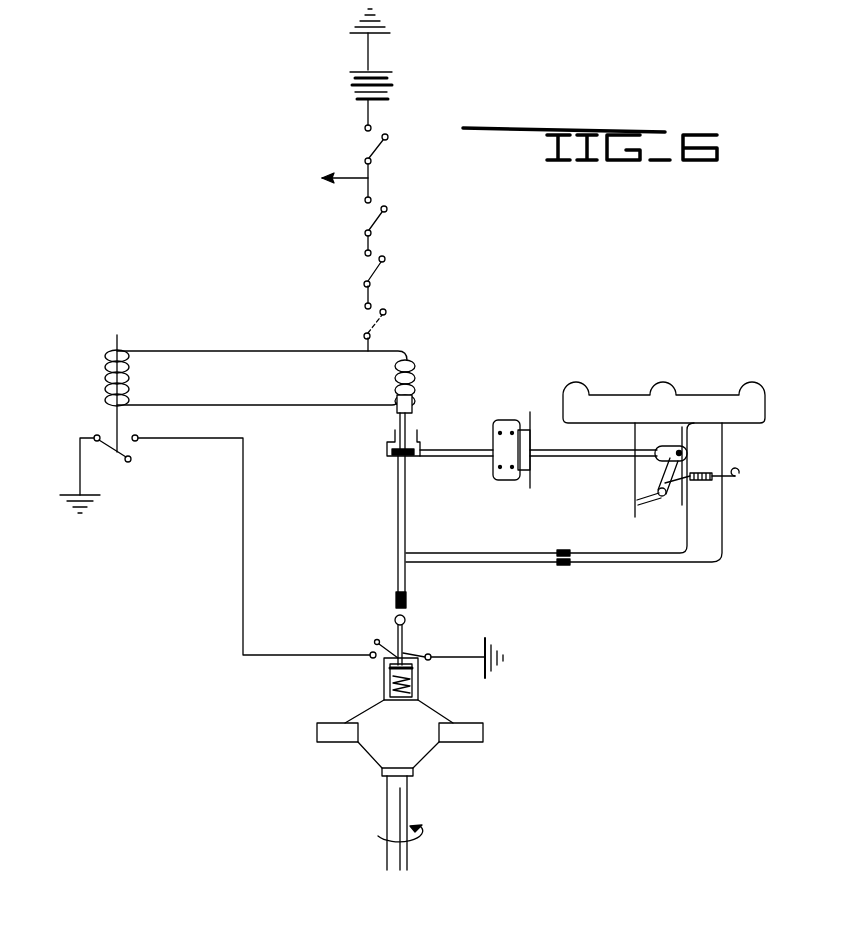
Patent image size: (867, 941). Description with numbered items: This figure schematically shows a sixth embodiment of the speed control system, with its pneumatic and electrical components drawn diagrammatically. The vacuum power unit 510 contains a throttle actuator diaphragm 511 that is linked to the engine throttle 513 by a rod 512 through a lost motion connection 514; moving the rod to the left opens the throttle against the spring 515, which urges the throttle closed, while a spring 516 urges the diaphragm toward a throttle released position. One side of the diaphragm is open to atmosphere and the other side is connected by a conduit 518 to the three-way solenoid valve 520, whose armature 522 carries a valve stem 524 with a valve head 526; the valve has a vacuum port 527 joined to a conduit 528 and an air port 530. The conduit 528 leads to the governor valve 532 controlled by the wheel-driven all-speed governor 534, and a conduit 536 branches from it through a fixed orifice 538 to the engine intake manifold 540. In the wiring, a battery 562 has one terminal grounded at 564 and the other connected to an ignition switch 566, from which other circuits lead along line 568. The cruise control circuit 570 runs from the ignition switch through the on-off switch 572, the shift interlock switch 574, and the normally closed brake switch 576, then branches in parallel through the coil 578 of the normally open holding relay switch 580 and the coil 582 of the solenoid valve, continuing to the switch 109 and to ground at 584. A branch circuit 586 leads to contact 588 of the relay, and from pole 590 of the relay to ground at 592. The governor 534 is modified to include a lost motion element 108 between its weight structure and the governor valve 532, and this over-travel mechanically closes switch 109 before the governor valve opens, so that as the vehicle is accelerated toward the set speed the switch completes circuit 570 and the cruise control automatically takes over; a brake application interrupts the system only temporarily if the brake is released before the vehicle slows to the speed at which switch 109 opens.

The ground 564 is at (388, 27).
The battery 562 is at (390, 90).
The ignition switch 566 is at (388, 144).
The line of other circuits 568 is at (347, 177).
The cruise control circuit line 570 is at (366, 242).
The on-off switch 572 is at (386, 224).
The shift interlock switch 574 is at (386, 280).
The brake switch 576 is at (388, 330).
The coil of holding relay switch 578 is at (130, 380).
The holding relay switch 580 is at (103, 426).
The coil of solenoid valve 582 is at (405, 375).
The branch circuit 586 is at (165, 440).
The contact of relay switch 588 is at (138, 436).
The pole of relay switch 590 is at (104, 447).
The ground 592 is at (90, 503).
The three-way solenoid valve 520 is at (406, 425).
The armature 522 is at (412, 366).
The valve stem 524 is at (413, 400).
The valve head 526 is at (396, 430).
The vacuum port 527 is at (408, 470).
The conduit 528 is at (397, 517).
The air port 530 is at (418, 440).
The conduit 518 is at (432, 457).
The vacuum power unit 510 is at (538, 447).
The throttle actuator diaphragm 511 is at (531, 440).
The rod 512 is at (562, 458).
The engine throttle 513 is at (645, 500).
The lost motion connection 514 is at (668, 445).
The spring 515 is at (713, 472).
The spring 516 is at (500, 482).
The conduit 536 is at (724, 512).
The fixed orifice 538 is at (565, 549).
The engine intake manifold 540 is at (763, 418).
The governor valve 532 is at (408, 620).
The switch 109 is at (372, 640).
The ground 584 is at (505, 665).
The lost motion element 108 is at (410, 680).
The governor 534 is at (372, 767).